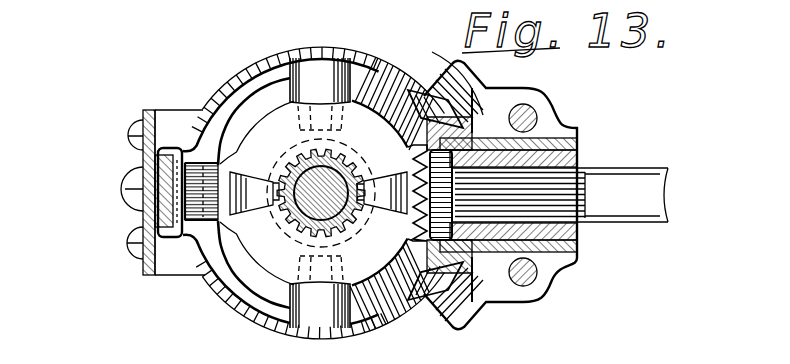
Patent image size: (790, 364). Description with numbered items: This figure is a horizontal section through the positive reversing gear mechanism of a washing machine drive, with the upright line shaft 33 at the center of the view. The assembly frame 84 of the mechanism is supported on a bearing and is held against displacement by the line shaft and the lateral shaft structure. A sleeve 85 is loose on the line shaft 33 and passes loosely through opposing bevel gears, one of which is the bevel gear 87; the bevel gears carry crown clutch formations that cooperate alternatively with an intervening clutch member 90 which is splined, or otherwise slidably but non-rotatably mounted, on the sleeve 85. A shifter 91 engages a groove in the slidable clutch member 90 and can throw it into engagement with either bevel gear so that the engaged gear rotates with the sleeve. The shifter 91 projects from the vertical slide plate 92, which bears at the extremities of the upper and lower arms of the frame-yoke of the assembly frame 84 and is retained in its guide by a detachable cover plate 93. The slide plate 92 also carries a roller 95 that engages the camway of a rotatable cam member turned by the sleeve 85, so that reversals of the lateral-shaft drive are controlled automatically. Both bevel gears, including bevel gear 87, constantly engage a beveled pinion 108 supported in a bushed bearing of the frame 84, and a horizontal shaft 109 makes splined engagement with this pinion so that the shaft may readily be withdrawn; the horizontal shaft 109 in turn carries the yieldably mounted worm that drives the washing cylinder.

The line shaft 33 is at (338, 211).
The assembly frame 84 is at (470, 304).
The sleeve 85 is at (295, 228).
The bevel gear 87 is at (366, 56).
The clutch member 90 is at (268, 131).
The shifter 91 is at (217, 287).
The slide plate 92 is at (147, 200).
The cover plate 93 is at (147, 112).
The roller 95 is at (137, 274).
The beveled pinion 108 is at (432, 72).
The horizontal shaft 109 is at (656, 170).